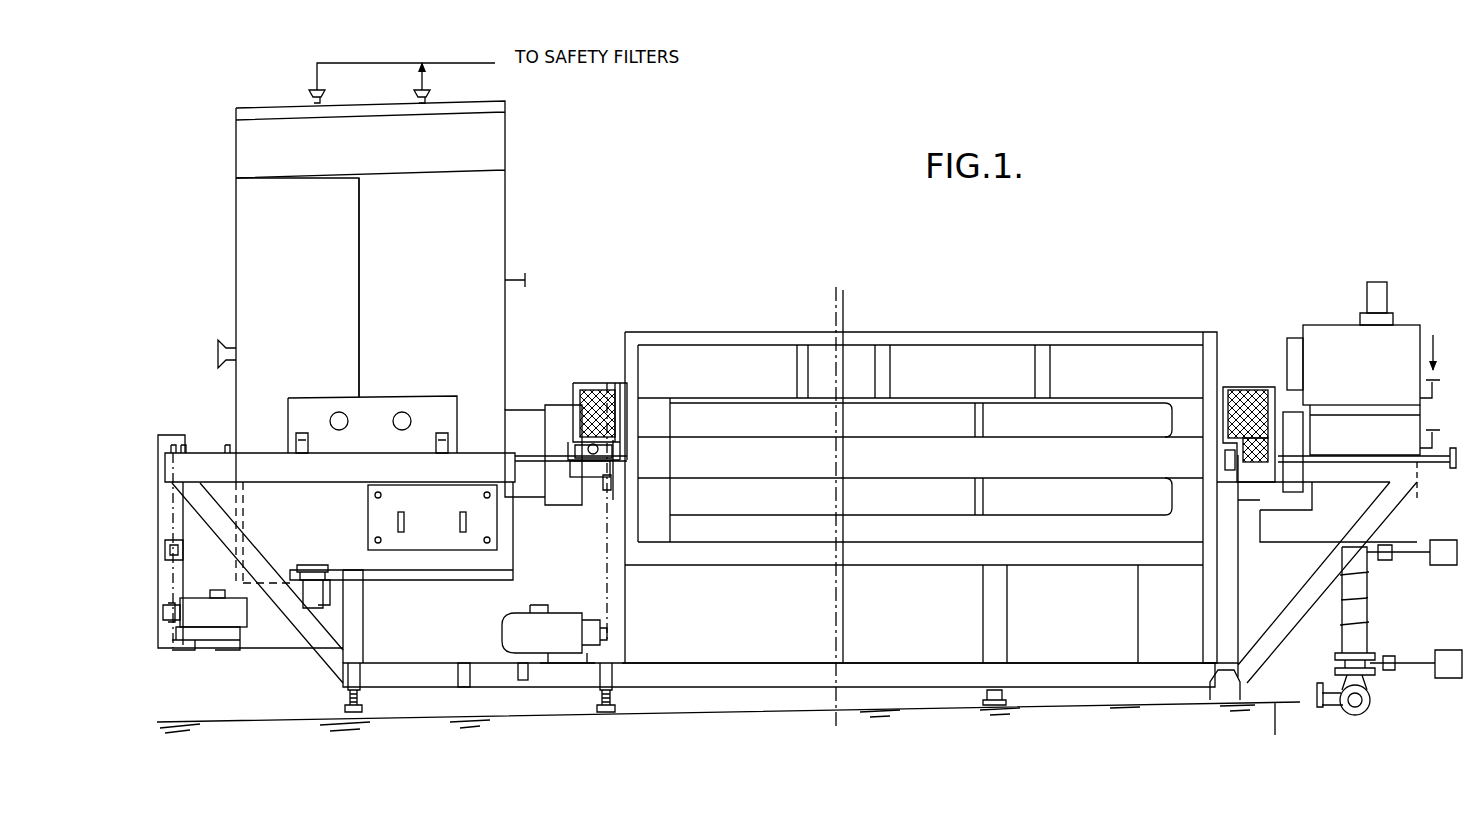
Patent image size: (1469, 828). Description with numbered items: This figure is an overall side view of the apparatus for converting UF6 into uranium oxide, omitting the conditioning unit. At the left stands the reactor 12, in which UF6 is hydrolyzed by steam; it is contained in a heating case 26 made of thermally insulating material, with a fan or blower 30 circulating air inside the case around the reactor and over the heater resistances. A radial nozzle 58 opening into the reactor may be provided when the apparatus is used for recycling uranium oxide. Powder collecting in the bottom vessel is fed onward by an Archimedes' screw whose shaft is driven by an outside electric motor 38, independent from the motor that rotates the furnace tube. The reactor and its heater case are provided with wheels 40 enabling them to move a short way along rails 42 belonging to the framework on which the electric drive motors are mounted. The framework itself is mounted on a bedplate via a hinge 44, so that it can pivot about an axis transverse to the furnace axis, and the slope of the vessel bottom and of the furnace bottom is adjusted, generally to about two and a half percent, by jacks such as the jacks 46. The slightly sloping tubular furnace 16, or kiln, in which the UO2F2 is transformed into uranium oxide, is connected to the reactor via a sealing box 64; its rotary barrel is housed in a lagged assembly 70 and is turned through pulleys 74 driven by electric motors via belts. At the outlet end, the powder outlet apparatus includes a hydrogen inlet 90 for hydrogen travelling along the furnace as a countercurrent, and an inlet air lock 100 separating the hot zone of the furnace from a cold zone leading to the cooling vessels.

The reactor 12 is at (268, 306).
The heating case 26 is at (483, 223).
The radial nozzle 58 is at (230, 357).
The wheels 40 is at (440, 455).
The rails 42 is at (528, 488).
The electric motor 38 is at (218, 612).
The fan or blower 30 is at (310, 575).
The jacks 46 is at (357, 692).
The sealing box 64 is at (561, 401).
The pulleys 74 is at (604, 490).
The tubular furnace 16 is at (756, 520).
The lagged assembly 70 is at (733, 363).
The hydrogen inlet 90 is at (1428, 388).
The inlet air lock 100 is at (1355, 620).
The hinge 44 is at (1220, 688).